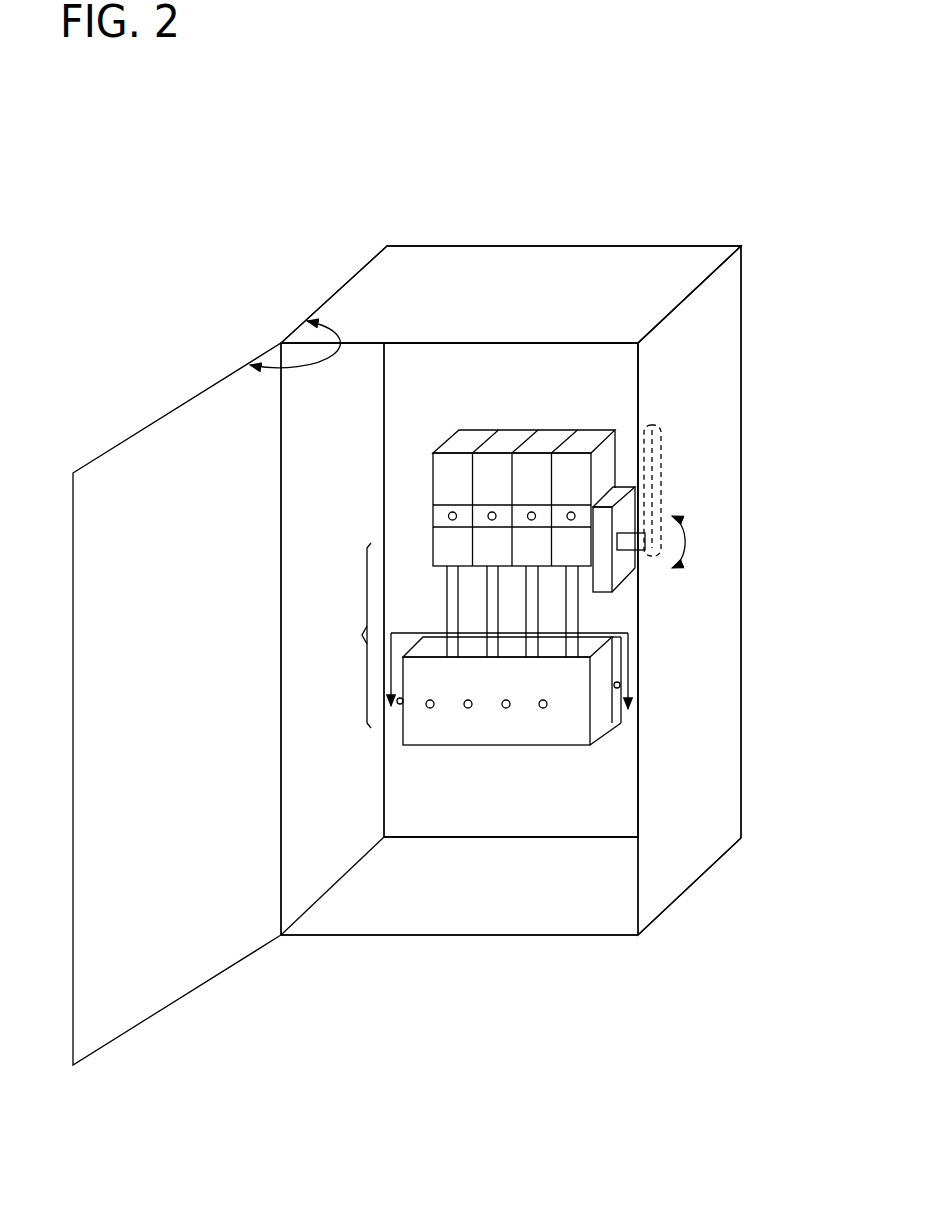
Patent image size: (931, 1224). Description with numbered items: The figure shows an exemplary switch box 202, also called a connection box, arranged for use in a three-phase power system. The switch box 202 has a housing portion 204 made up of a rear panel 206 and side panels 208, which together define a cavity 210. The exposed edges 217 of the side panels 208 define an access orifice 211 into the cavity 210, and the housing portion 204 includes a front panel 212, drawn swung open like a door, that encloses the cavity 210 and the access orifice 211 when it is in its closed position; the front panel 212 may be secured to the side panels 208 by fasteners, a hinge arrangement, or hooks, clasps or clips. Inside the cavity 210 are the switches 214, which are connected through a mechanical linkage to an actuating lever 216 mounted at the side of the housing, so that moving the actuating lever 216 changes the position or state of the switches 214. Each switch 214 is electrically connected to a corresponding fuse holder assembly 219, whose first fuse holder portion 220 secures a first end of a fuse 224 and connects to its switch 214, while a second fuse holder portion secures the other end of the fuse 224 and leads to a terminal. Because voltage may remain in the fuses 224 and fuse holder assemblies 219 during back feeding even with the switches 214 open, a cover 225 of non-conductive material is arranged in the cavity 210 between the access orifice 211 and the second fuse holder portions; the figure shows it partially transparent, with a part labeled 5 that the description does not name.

The switch box 202 is at (703, 232).
The housing portion 204 is at (741, 332).
The rear panel 206 is at (557, 823).
The side panels 208 is at (398, 260).
The cavity 210 is at (593, 376).
The access orifice 211 is at (648, 653).
The front panel 212 is at (105, 482).
The switches 214 is at (477, 437).
The actuating lever 216 is at (660, 497).
The exposed edges 217 is at (410, 343).
The fuse holder assemblies 219 is at (343, 635).
The first fuse holder portion 220 is at (511, 546).
The fuse 224 is at (487, 602).
The cover 225 is at (471, 750).
The fastener 5 is at (632, 680).